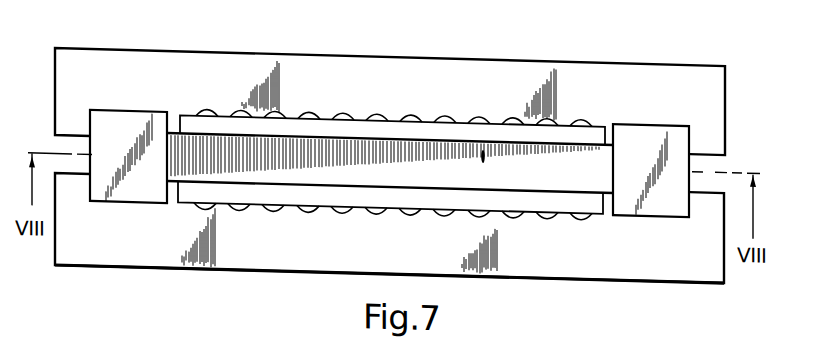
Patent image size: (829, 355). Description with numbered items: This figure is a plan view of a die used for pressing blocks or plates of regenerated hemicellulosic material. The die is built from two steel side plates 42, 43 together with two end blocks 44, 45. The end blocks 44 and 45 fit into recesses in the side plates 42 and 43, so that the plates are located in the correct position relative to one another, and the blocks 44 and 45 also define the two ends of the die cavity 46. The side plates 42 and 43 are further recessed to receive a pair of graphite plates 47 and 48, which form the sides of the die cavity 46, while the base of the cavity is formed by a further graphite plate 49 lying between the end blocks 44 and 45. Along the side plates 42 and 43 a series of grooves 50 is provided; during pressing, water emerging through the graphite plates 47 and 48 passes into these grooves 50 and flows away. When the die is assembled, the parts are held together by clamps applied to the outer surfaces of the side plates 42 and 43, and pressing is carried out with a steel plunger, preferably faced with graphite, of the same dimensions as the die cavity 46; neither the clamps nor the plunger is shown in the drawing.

The steel side plate 42 is at (78, 54).
The steel side plate 43 is at (182, 249).
The end block 44 is at (130, 190).
The end block 45 is at (643, 131).
The die cavity 46 is at (483, 131).
The graphite plate 47 is at (353, 120).
The graphite plate 48 is at (328, 190).
The graphite plate 49 is at (432, 148).
The grooves 50 is at (213, 104).